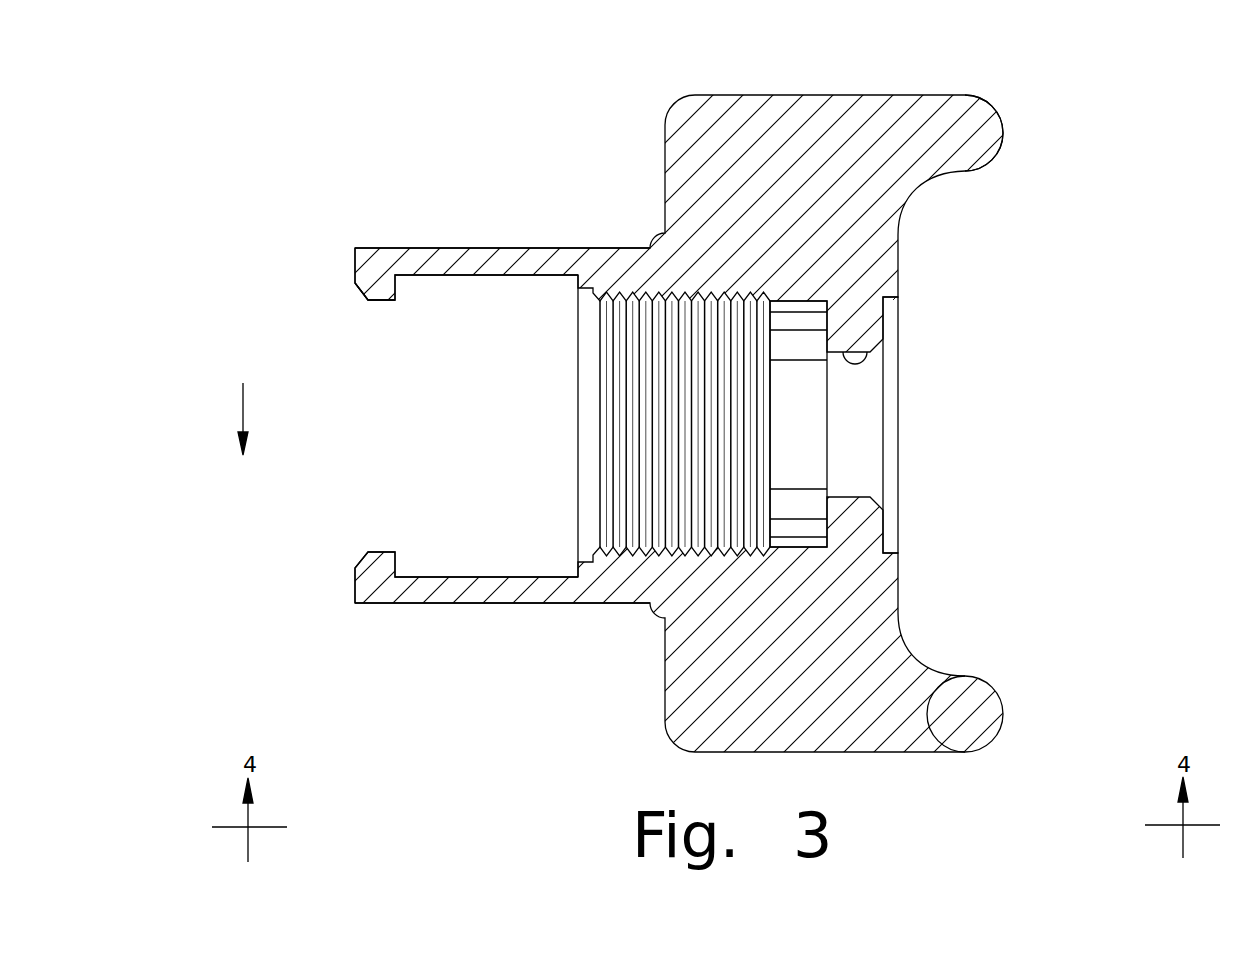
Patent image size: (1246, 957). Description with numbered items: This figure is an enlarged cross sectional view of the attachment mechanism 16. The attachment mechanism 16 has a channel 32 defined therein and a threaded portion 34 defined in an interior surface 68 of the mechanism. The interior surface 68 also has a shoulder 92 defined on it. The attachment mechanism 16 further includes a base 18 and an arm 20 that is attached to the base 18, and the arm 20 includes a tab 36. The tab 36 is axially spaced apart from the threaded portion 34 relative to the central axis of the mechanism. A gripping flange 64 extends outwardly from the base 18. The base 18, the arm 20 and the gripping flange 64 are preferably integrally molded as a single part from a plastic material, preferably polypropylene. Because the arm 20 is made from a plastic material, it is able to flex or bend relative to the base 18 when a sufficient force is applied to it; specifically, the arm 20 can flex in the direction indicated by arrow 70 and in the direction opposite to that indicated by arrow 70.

The attachment mechanism 16 is at (380, 122).
The base 18 is at (893, 263).
The arm 20 is at (455, 252).
The channel 32 is at (890, 336).
The threaded portion 34 is at (601, 309).
The tab 36 is at (365, 286).
The gripping flange 64 is at (993, 132).
The interior surface 68 is at (827, 514).
The arrow 70 is at (245, 409).
The shoulder 92 is at (829, 341).